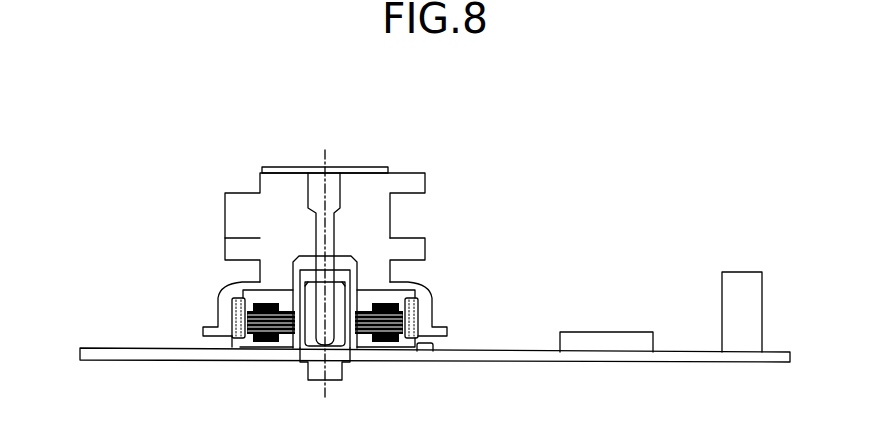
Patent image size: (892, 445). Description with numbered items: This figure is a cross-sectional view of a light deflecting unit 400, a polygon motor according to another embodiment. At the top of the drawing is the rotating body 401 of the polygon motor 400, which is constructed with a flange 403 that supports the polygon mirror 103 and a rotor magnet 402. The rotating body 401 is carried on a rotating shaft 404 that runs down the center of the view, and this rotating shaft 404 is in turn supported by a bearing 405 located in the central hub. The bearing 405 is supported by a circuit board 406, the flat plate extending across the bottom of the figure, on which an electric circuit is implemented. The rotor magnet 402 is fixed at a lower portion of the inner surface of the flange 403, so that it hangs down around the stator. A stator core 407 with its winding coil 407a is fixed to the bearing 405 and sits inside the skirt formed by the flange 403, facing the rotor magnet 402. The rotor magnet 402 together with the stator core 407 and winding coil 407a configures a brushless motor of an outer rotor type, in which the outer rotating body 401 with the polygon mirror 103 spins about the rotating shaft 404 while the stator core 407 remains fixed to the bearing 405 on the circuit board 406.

The light deflecting unit 400 is at (343, 126).
The rotating body 401 is at (382, 222).
The polygon mirror 103 is at (421, 253).
The rotating shaft 404 is at (328, 209).
The flange 403 is at (427, 305).
The rotor magnet 402 is at (412, 317).
The bearing 405 is at (342, 335).
The circuit board 406 is at (468, 355).
The stator core 407 is at (254, 336).
The winding coil 407a is at (267, 338).